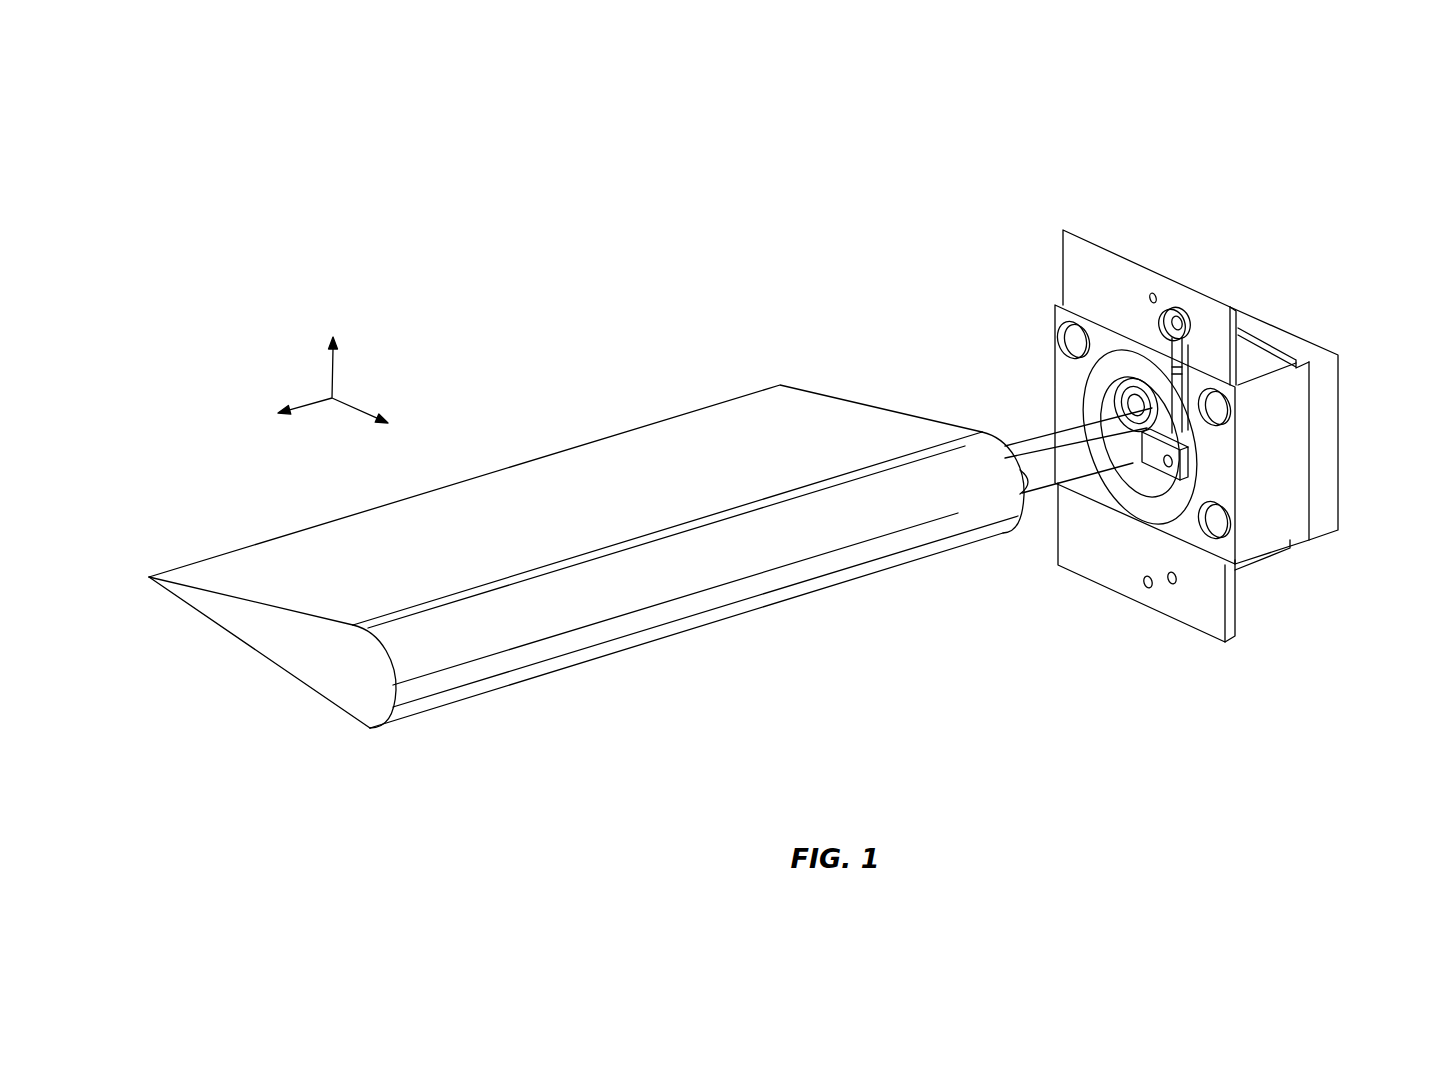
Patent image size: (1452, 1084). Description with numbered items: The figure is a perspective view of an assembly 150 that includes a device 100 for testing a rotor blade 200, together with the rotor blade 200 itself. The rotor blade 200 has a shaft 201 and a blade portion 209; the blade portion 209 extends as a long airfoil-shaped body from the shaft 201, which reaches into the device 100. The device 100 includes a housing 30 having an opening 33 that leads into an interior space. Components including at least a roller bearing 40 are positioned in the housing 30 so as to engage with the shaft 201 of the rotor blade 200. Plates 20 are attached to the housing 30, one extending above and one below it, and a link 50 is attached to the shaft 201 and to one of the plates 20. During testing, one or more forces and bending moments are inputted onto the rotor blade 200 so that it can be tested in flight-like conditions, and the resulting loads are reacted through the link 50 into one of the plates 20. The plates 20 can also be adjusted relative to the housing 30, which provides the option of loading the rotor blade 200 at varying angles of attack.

The device 100 is at (1260, 248).
The plates 20 is at (1093, 268).
The housing 30 is at (1322, 402).
The opening 33 is at (1110, 393).
The roller bearing 40 is at (1158, 480).
The link 50 is at (1187, 373).
The assembly 150 is at (514, 304).
The rotor blade 200 is at (240, 524).
The shaft 201 is at (1062, 465).
The blade portion 209 is at (295, 645).